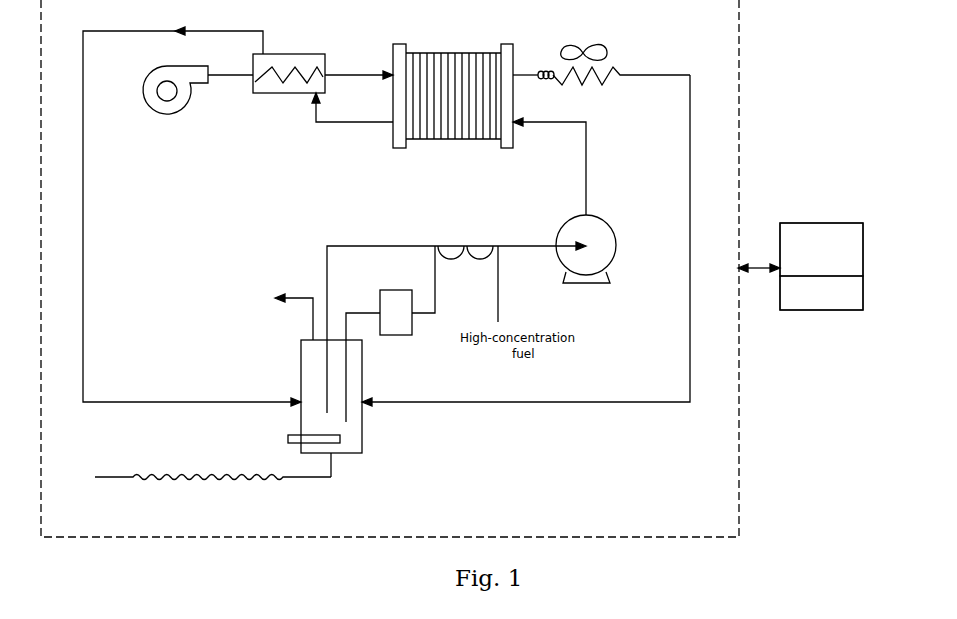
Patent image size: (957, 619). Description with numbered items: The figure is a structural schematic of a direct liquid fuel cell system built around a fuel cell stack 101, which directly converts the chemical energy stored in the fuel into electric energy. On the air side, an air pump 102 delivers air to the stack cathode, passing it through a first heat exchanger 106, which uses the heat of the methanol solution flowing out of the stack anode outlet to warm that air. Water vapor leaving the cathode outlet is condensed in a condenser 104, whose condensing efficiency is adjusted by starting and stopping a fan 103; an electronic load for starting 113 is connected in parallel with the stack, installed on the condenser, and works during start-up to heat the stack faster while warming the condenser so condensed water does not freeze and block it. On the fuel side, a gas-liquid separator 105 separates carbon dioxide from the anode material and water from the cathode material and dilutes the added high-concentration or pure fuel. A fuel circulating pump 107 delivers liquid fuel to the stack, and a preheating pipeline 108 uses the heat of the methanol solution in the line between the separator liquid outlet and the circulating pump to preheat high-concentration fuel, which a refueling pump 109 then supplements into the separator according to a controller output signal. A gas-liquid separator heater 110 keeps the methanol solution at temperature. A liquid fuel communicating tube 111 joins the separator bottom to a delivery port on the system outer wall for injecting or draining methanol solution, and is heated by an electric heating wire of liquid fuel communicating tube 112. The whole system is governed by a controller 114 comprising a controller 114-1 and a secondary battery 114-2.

The fuel cell stack 101 is at (447, 155).
The air pump 102 is at (170, 124).
The fan 103 is at (570, 42).
The condenser 104 is at (626, 66).
The gas-liquid separator 105 is at (362, 456).
The first heat exchanger 106 is at (247, 97).
The fuel circulating pump 107 is at (585, 290).
The preheating pipeline 108 is at (470, 238).
The refueling pump 109 is at (415, 334).
The gas-liquid separator heater 110 is at (286, 441).
The liquid fuel communicating tube 111 is at (330, 480).
The electric heating wire of liquid fuel communicating tube 112 is at (220, 483).
The electronic load for starting 113 is at (543, 82).
The controller 114 is at (821, 282).
The controller 114-1 is at (821, 249).
The secondary battery 114-2 is at (821, 293).